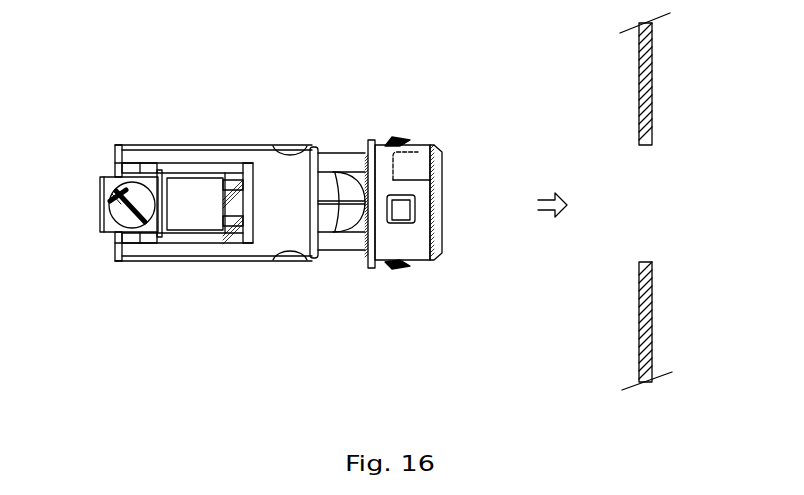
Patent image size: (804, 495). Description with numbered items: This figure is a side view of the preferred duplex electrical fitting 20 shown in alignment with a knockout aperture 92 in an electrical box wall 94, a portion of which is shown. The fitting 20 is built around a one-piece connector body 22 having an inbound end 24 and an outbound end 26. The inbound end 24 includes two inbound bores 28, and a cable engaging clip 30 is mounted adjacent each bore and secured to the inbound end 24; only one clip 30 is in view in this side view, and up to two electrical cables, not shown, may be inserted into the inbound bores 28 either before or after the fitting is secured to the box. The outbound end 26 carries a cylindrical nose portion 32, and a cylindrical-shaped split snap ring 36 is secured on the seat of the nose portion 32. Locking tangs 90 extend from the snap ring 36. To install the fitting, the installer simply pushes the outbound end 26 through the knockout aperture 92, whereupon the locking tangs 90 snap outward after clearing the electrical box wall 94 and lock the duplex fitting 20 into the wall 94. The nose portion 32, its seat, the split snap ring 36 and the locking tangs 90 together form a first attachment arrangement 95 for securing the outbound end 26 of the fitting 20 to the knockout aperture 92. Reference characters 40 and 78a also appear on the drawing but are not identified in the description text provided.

The duplex electrical fitting 20 is at (127, 103).
The connector body 22 is at (160, 262).
The inbound end 24 is at (100, 232).
The outbound end 26 is at (443, 205).
The inbound bores 28 is at (238, 202).
The cable engaging clip 30 is at (100, 203).
The cylindrical nose portion 32 is at (362, 252).
The split snap ring 36 is at (417, 232).
The flange 40 is at (371, 139).
The slider 78a is at (197, 217).
The locking tangs 90 is at (401, 208).
The knockout aperture 92 is at (647, 205).
The electrical box wall 94 is at (652, 82).
The first attachment arrangement 95 is at (413, 273).